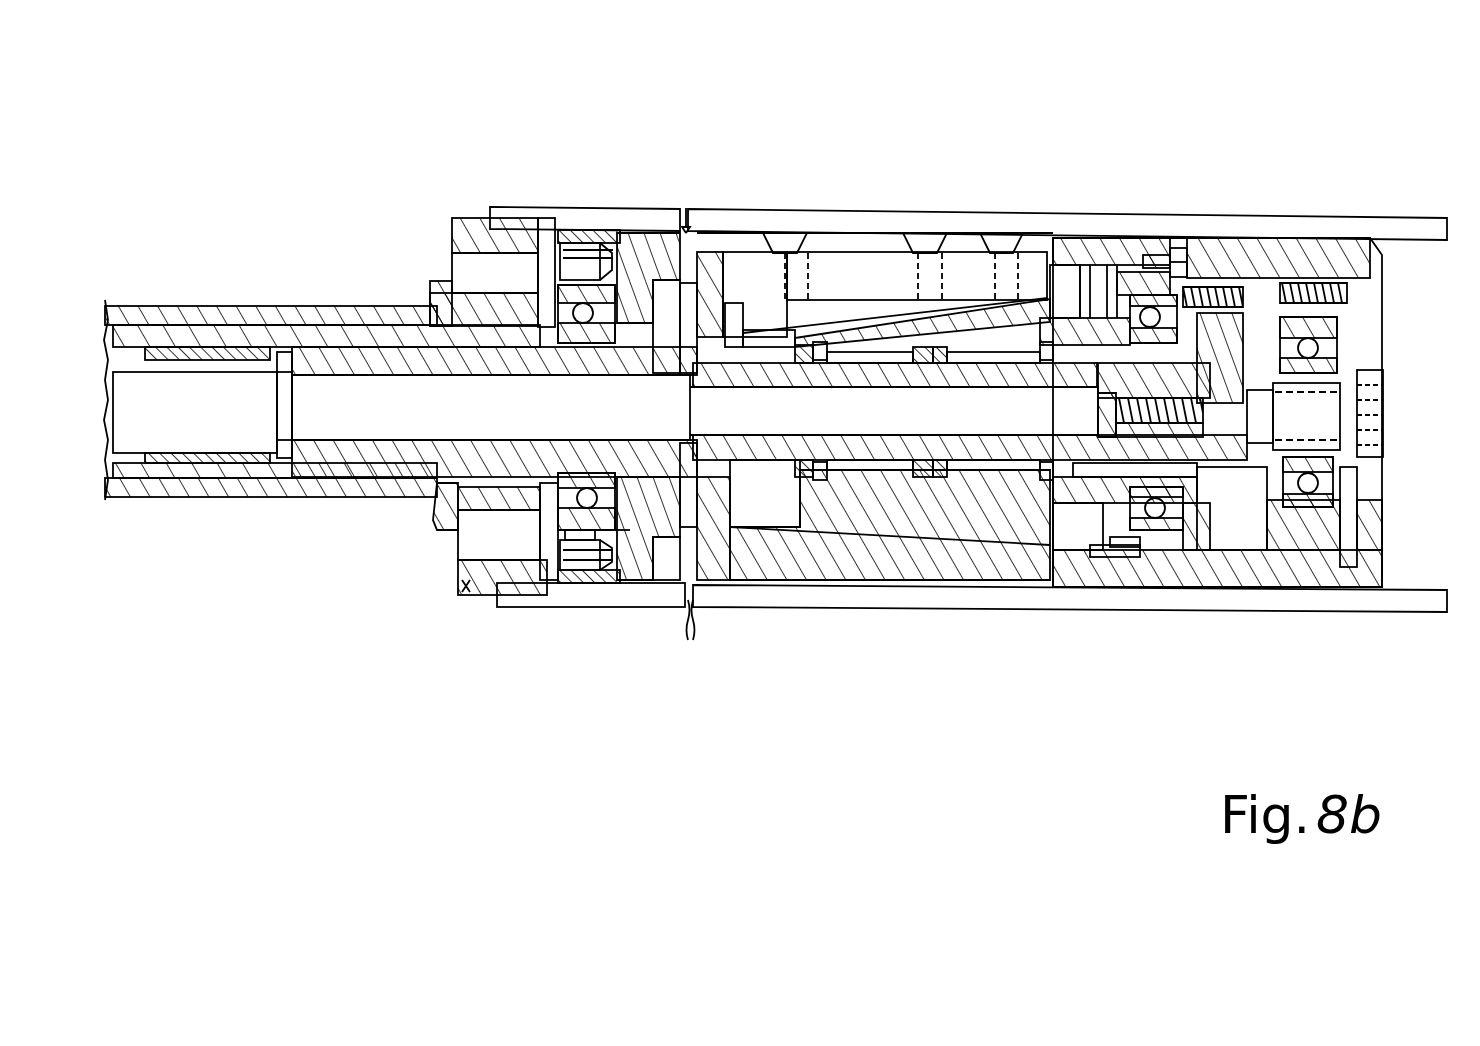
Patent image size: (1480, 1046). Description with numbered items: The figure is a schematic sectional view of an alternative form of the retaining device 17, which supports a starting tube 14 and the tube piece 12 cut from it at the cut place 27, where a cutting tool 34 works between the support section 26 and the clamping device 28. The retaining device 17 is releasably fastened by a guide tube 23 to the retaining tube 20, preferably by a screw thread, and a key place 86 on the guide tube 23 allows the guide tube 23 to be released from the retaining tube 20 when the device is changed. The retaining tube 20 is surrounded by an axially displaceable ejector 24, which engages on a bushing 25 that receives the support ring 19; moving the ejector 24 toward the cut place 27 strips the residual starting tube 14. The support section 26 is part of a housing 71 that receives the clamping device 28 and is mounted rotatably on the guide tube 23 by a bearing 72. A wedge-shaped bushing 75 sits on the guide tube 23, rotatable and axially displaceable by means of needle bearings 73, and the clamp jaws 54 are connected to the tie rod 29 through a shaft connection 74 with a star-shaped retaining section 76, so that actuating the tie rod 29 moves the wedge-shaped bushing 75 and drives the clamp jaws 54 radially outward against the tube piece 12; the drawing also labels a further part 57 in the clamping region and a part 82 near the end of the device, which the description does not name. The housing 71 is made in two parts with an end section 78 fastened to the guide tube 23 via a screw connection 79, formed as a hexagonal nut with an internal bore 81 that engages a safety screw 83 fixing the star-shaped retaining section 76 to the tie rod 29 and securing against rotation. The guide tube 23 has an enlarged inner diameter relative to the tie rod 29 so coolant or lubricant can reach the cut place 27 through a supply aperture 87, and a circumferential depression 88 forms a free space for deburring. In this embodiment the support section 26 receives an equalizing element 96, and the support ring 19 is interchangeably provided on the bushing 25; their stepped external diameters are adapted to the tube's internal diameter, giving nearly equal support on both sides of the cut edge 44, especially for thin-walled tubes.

The tube piece 12 is at (1065, 227).
The starting tube 14 is at (540, 230).
The retaining device 17 is at (850, 647).
The support ring 19 is at (462, 593).
The retaining tube 20 is at (150, 467).
The guide tube 23 is at (663, 463).
The ejector 24 is at (243, 485).
The bushing 25 is at (437, 295).
The support section 26 is at (612, 557).
The cut place 27 is at (688, 198).
The clamping device 28 is at (960, 191).
The tie rod 29 is at (330, 417).
The cutting tool 34 is at (690, 643).
The cut edge 44 is at (685, 227).
The clamp jaws 54 is at (850, 267).
The piston 57 is at (755, 327).
The housing 71 is at (937, 567).
The bearing 72 is at (556, 520).
The needle bearings 73 is at (947, 467).
The shaft connection 74 is at (1123, 540).
The wedge-shaped bushing 75 is at (1020, 535).
The star-shaped retaining section 76 is at (1240, 343).
The end section 78 is at (1320, 573).
The screw connection 79 is at (1375, 388).
The internal bore 81 is at (1385, 410).
The coupling 82 is at (1258, 423).
The safety screw 83 is at (1175, 253).
The key place 86 is at (545, 545).
The supply aperture 87 is at (663, 290).
The depression 88 is at (673, 553).
The equalizing element 96 is at (594, 557).